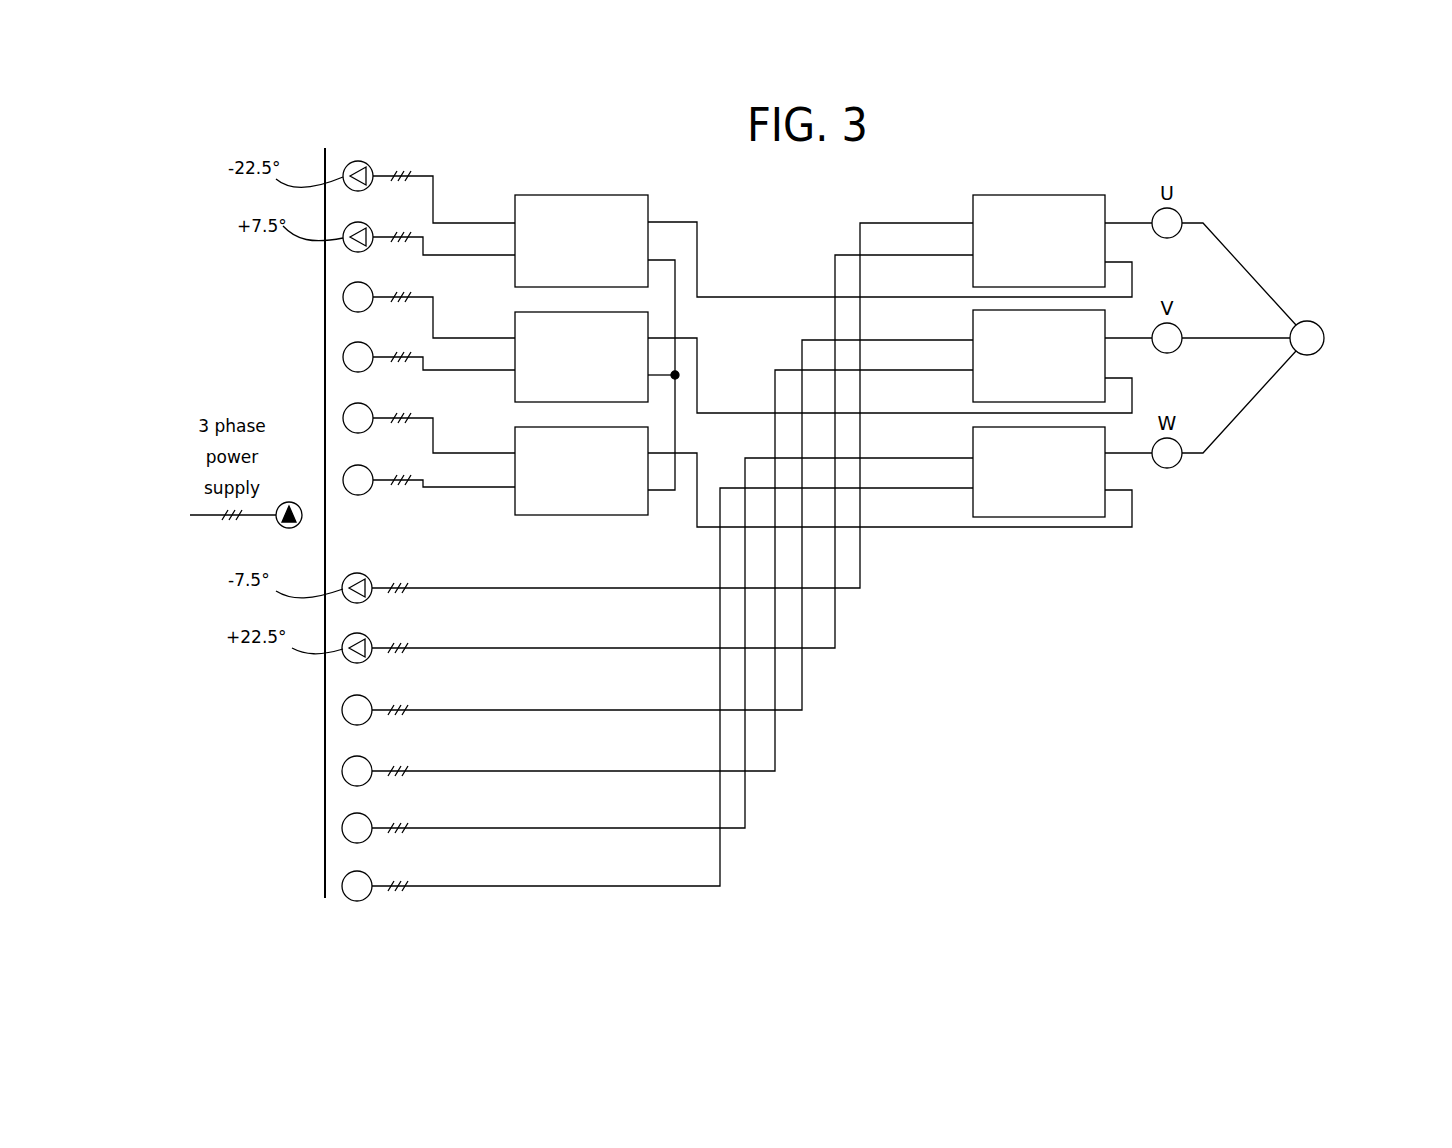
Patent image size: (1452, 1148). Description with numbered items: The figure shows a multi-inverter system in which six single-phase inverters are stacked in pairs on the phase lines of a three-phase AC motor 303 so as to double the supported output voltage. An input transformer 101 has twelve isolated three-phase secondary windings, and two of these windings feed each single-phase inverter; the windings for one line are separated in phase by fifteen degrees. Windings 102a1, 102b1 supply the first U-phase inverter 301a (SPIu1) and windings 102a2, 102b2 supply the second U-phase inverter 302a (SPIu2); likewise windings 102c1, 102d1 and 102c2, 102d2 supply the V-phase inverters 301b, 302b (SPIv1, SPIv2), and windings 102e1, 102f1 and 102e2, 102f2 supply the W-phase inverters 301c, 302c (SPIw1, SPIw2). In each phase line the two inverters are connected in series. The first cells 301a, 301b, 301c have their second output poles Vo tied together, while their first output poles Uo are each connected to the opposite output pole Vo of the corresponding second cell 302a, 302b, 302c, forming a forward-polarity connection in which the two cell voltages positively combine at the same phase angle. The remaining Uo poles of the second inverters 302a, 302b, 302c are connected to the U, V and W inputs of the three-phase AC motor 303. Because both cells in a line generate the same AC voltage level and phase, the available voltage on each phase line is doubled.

The input transformer 101 is at (338, 126).
The secondary winding 102a1 is at (429, 182).
The secondary winding 102b1 is at (429, 229).
The secondary winding 102c1 is at (429, 301).
The secondary winding 102d1 is at (429, 348).
The secondary winding 102e1 is at (429, 419).
The secondary winding 102f1 is at (429, 471).
The secondary winding 102a2 is at (657, 413).
The secondary winding 102b2 is at (657, 459).
The secondary winding 102c2 is at (657, 532).
The secondary winding 102d2 is at (657, 578).
The secondary winding 102e2 is at (657, 650).
The secondary winding 102f2 is at (657, 694).
The first inverter cell 301a is at (532, 287).
The first inverter cell 301b is at (532, 402).
The first inverter cell 301c is at (532, 515).
The second inverter cell 302a is at (973, 216).
The second inverter cell 302b is at (973, 331).
The second inverter cell 302c is at (973, 443).
The three-phase AC motor 303 is at (1306, 320).